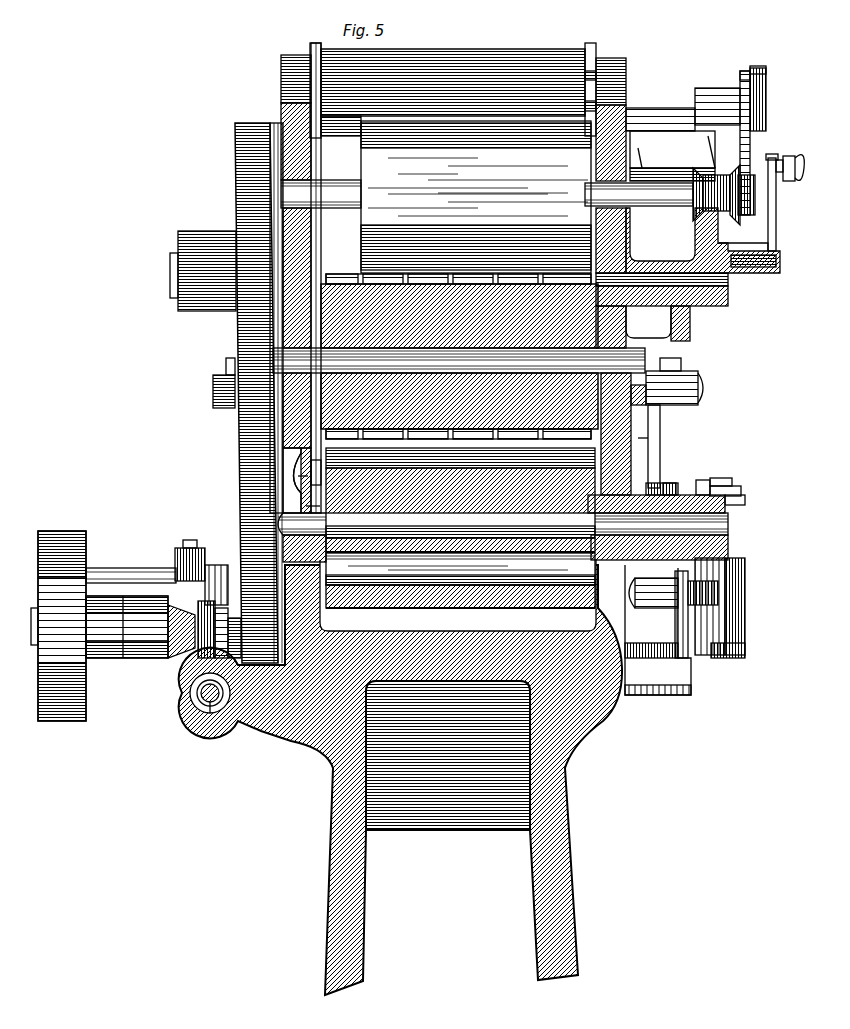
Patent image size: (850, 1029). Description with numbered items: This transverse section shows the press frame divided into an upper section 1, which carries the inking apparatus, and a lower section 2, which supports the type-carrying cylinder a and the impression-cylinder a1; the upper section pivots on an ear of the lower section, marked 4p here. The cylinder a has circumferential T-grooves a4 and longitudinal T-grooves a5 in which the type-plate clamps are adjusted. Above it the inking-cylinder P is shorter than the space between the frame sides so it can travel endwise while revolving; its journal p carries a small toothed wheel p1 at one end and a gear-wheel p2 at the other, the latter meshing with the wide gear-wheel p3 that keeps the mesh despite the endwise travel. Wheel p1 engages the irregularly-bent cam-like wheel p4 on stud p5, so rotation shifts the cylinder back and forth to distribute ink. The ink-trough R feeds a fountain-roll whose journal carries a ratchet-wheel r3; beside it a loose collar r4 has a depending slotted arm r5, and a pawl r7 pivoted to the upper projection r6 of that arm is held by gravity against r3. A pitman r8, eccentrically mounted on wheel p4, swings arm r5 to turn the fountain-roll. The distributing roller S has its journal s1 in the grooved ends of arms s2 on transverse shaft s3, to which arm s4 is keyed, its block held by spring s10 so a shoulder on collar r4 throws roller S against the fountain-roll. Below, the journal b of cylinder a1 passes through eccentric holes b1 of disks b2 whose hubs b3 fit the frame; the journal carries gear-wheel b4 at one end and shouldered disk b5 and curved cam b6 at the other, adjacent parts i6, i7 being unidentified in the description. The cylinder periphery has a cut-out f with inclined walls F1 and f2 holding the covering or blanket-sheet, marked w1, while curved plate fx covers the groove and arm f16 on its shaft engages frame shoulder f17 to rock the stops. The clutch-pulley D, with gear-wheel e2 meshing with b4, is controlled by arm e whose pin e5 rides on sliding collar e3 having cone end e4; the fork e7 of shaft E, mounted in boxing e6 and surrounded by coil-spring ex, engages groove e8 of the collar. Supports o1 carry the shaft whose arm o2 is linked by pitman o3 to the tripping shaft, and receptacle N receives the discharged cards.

The gear-wheel p2 is at (410, 75).
The wide gear-wheel p3 is at (192, 302).
The upper frame section 1 is at (275, 86).
The ink-trough R is at (453, 80).
The distributing ink-roller S is at (546, 95).
The journal s1 is at (650, 115).
The transverse shaft s3 is at (672, 149).
The spring s10 is at (661, 159).
The arm s4 is at (701, 152).
The upper projection r6 is at (737, 62).
The pawl r7 is at (757, 60).
The ratchet-wheel r3 is at (760, 82).
The loose collar r4 is at (737, 104).
The slotted arm r5 is at (744, 140).
The pitman r8 is at (769, 228).
The small toothed wheel p1 is at (695, 190).
The cam-like wheel p4 is at (708, 228).
The stud p5 is at (722, 272).
The journal p is at (356, 185).
The inking-cylinder P is at (503, 183).
The arms s2 is at (354, 130).
The circumferential T-grooves a4 is at (400, 268).
The longitudinal T-grooves a5 is at (518, 268).
The type-carrying cylinder a is at (345, 290).
The bar 4p is at (252, 404).
The lower frame section 2 is at (277, 433).
The arm f16 is at (290, 452).
The gear-wheel b4 is at (292, 468).
The disks b2 is at (303, 488).
The shoulder f17 is at (298, 498).
The eccentrically-located holes b1 is at (300, 525).
The hubs b3 is at (300, 545).
The journal b is at (722, 518).
The shouldered disk b5 is at (662, 476).
The curved cam b6 is at (712, 478).
The pin i6 is at (730, 478).
The pin i7 is at (724, 497).
The depending supports o1 is at (690, 428).
The arm o2 is at (700, 445).
The pitman o3 is at (662, 611).
The receptacle N is at (740, 606).
The clutch-controlling arm e is at (128, 565).
The pin e5 is at (170, 560).
The gear-wheel e2 is at (218, 585).
The circumferential groove e8 is at (158, 640).
The beveled end e4 is at (172, 645).
The sliding collar e3 is at (198, 655).
The fork e7 is at (182, 680).
The boxing e6 is at (183, 698).
The shaft E is at (191, 717).
The coil-spring ex is at (201, 710).
The clutch-pulley D is at (62, 637).
The inclined wall F1 is at (460, 524).
The groove or cut-out f is at (460, 532).
The curved plate fx is at (460, 558).
The inclined wall f2 is at (460, 569).
The impression-cylinder a1 is at (460, 537).
The winding w1 is at (460, 545).